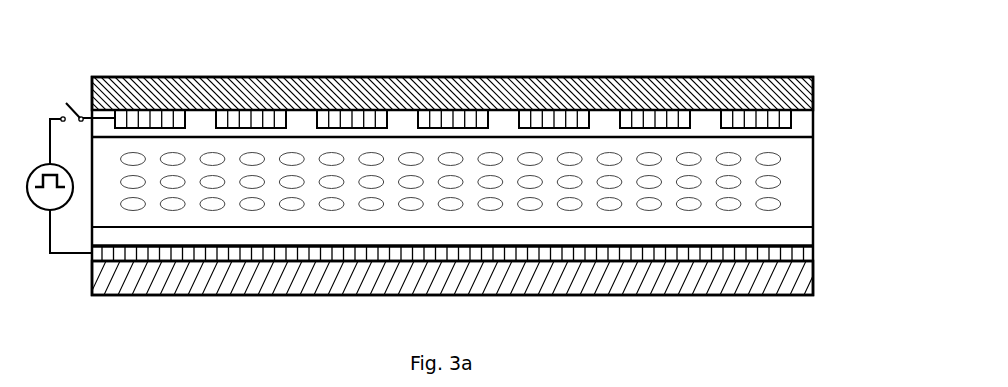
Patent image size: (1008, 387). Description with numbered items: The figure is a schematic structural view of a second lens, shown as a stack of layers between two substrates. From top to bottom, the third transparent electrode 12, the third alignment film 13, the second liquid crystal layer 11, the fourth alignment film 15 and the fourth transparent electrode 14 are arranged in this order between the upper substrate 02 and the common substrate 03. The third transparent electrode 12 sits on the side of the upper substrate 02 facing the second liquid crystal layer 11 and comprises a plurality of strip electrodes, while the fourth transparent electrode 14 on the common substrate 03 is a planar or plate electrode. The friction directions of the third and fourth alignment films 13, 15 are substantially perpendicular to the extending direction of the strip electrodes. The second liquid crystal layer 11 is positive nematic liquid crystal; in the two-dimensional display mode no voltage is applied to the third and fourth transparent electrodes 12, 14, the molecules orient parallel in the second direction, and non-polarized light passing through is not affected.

The upper substrate 02 is at (813, 93).
The common substrate 03 is at (813, 287).
The second liquid crystal layer 11 is at (789, 190).
The third transparent electrode 12 is at (755, 117).
The third alignment film 13 is at (813, 123).
The fourth transparent electrode 14 is at (813, 257).
The fourth alignment film 15 is at (813, 230).